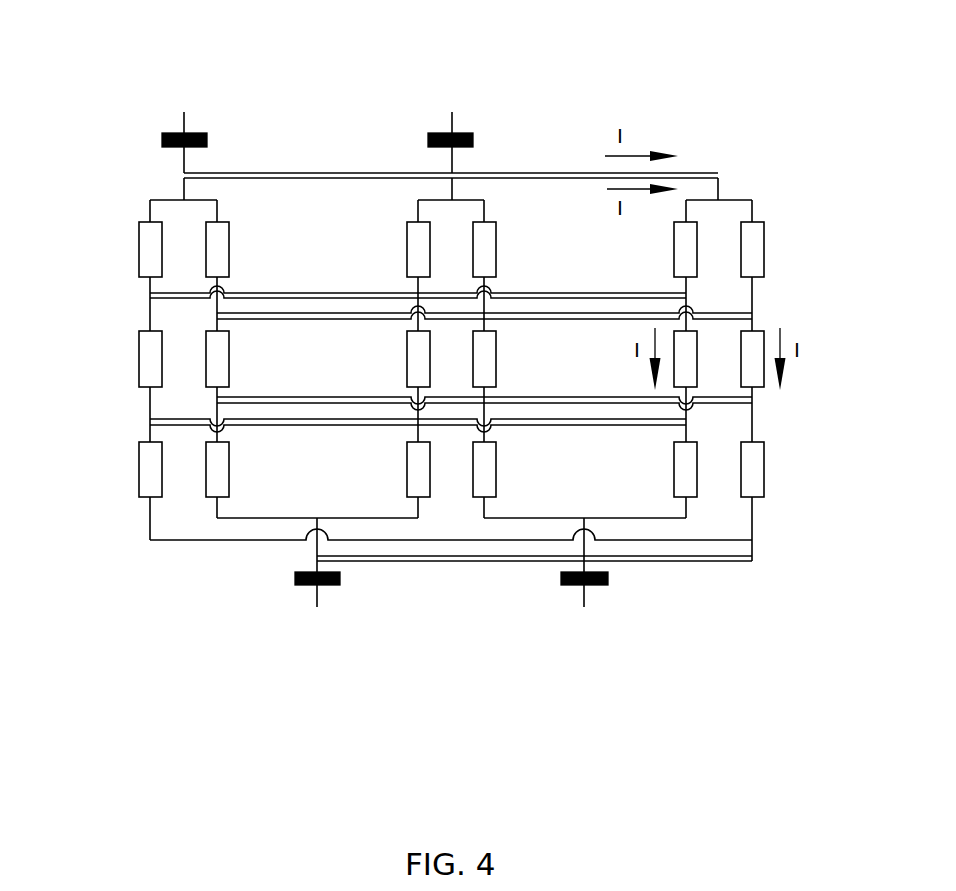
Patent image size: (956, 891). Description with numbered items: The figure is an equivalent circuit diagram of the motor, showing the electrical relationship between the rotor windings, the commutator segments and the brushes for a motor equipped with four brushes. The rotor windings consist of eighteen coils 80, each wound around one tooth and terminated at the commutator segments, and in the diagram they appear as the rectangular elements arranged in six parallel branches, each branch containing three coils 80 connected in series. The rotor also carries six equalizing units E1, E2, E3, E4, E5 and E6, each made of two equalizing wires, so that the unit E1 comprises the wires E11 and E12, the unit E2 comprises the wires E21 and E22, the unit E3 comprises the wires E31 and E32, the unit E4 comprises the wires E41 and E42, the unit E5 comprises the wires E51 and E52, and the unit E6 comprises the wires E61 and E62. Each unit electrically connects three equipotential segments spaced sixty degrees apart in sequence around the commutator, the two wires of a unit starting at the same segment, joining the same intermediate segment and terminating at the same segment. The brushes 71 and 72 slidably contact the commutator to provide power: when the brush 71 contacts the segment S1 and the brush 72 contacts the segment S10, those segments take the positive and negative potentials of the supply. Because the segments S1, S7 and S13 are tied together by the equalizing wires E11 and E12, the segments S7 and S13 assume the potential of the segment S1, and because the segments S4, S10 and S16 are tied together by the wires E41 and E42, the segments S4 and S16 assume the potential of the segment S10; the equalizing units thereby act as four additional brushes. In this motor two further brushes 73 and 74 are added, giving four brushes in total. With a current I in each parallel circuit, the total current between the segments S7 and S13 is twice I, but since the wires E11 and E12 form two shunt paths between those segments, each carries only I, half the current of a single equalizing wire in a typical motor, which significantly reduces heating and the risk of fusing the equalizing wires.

The brush 71 is at (172, 130).
The brush 72 is at (597, 585).
The further brush 73 is at (463, 133).
The further brush 74 is at (330, 587).
The coil 80 is at (757, 257).
The segment S1 is at (178, 187).
The segment S4 is at (375, 518).
The segment S7 is at (453, 188).
The segment S10 is at (534, 518).
The segment S13 is at (721, 187).
The segment S16 is at (183, 542).
The equalizing unit E1 is at (451, 92).
The equalizing wire E11 is at (350, 172).
The equalizing wire E12 is at (404, 172).
The equalizing unit E2 is at (484, 162).
The equalizing wire E21 is at (548, 317).
The equalizing wire E22 is at (588, 317).
The equalizing unit E3 is at (484, 537).
The equalizing wire E31 is at (625, 403).
The equalizing wire E32 is at (652, 398).
The equalizing unit E4 is at (534, 631).
The equalizing wire E41 is at (508, 660).
The equalizing wire E42 is at (475, 557).
The equalizing unit E5 is at (418, 560).
The equalizing wire E51 is at (245, 430).
The equalizing wire E52 is at (263, 421).
The equalizing unit E6 is at (418, 152).
The equalizing wire E61 is at (273, 293).
The equalizing wire E62 is at (320, 298).